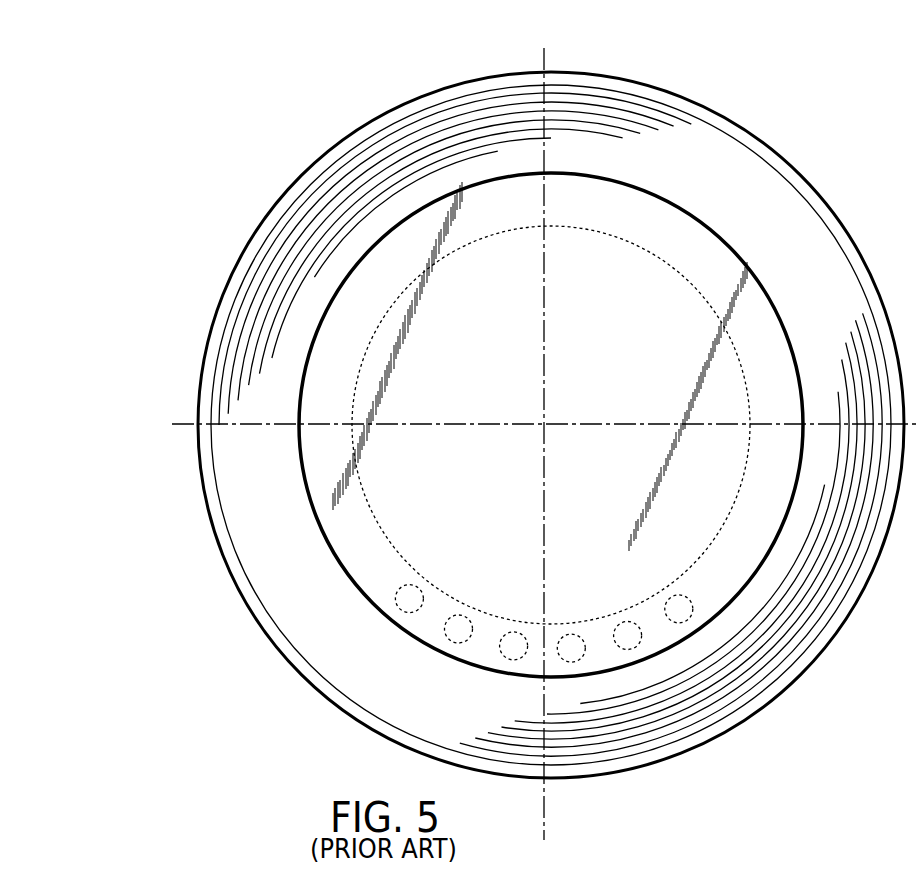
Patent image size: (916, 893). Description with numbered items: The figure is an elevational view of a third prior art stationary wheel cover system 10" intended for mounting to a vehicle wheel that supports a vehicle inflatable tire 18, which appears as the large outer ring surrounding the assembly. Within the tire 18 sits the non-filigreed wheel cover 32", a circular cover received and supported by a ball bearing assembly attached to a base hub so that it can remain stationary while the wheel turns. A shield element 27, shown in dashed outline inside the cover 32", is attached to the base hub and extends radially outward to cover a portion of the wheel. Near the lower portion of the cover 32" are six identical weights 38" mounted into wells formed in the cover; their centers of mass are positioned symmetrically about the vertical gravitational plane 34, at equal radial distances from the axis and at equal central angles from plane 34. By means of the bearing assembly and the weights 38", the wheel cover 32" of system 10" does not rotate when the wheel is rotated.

The stationary wheel cover system 10 is at (706, 206).
The vehicle inflatable tire 18 is at (821, 197).
The wheel cover 32 is at (768, 292).
The shield element 27 is at (741, 362).
The weights 38 is at (486, 571).
The gravitational plane 34 is at (545, 802).